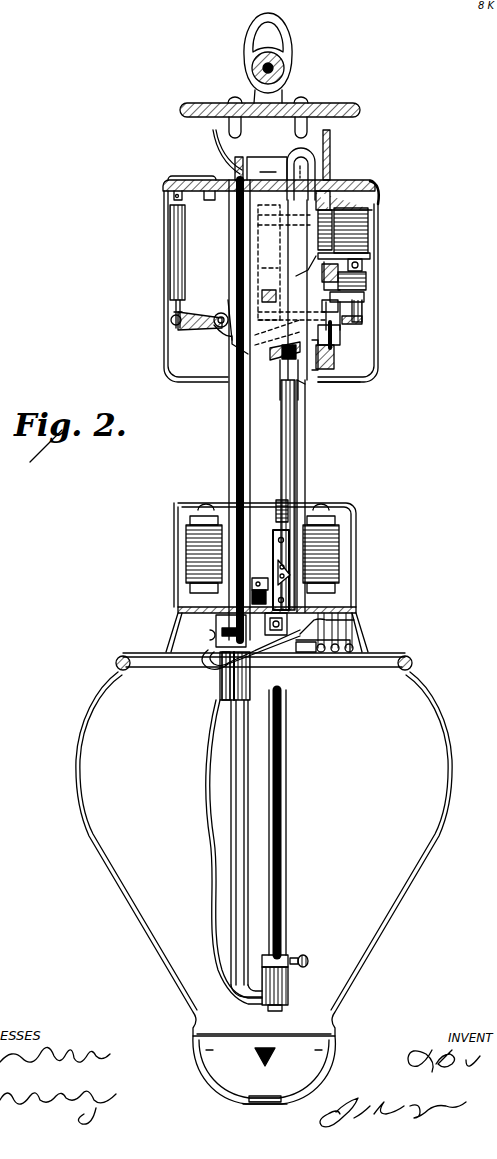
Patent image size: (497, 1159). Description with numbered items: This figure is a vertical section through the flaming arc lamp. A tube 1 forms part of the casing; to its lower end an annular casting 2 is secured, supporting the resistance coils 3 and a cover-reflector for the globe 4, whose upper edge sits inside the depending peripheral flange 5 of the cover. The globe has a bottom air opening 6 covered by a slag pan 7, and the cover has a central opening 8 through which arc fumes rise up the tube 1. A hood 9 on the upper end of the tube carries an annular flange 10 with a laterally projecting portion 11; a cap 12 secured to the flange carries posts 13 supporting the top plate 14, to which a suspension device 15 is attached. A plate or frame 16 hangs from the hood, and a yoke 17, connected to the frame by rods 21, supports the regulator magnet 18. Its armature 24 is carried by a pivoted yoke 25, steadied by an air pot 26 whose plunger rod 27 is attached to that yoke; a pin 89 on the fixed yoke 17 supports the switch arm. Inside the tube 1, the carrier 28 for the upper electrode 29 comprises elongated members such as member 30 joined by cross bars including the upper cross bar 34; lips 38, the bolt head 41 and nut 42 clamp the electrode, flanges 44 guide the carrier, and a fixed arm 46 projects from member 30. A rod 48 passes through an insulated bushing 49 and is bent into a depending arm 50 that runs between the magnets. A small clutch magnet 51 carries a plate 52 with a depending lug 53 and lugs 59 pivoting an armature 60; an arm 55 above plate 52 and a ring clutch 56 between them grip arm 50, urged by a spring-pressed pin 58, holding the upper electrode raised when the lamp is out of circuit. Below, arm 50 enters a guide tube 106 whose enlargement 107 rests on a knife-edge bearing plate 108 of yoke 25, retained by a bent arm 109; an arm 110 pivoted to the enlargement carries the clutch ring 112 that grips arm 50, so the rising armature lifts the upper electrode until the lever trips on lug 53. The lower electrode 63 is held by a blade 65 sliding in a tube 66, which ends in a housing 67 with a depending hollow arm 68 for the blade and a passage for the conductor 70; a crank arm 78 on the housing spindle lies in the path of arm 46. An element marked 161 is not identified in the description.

The tube 1 is at (228, 266).
The annular casting 2 is at (176, 624).
The resistance coils 3 is at (186, 552).
The globe 4 is at (400, 900).
The depending peripheral flange 5 is at (428, 656).
The opening 6 is at (278, 1104).
The pan 7 is at (264, 1069).
The central opening 8 is at (306, 654).
The hood 9 is at (360, 184).
The annular flange 10 is at (239, 158).
The laterally projecting portion 11 is at (314, 166).
The cap 12 is at (216, 145).
The posts 13 is at (306, 116).
The top plate 14 is at (212, 102).
The suspension device 15 is at (279, 62).
The plate or frame 16 is at (378, 194).
The yoke 17 is at (218, 312).
The magnet 18 is at (366, 300).
The rods 21 is at (366, 314).
The armature 24 is at (340, 364).
The armature yoke 25 is at (278, 358).
The air pot 26 is at (186, 254).
The rod 27 is at (176, 300).
The upper electrode carrier 28 is at (296, 490).
The upper metallic electrode 29 is at (296, 656).
The elongated member 30 is at (281, 438).
The upper cross bar 34 is at (305, 393).
The lips 38 is at (272, 656).
The head 41 is at (268, 622).
The nut 42 is at (276, 540).
The flanges 44 is at (278, 520).
The fixed arm 46 is at (277, 576).
The rod 48 is at (269, 165).
The insulated bushing 49 is at (285, 360).
The depending arm 50 is at (332, 184).
The small magnet 51 is at (370, 234).
The arm or plate 52 is at (372, 254).
The depending lug 53 is at (364, 266).
The arm 55 is at (296, 249).
The ring clutch 56 is at (296, 268).
The spring actuated pin 58 is at (296, 230).
The lugs 59 is at (370, 278).
The armature 60 is at (368, 284).
The lower electrode 63 is at (286, 826).
The blade or carrier 65 is at (214, 504).
The tube 66 is at (229, 230).
The housing 67 is at (234, 172).
The depending hollow arm 68 is at (226, 676).
The conductor 70 is at (207, 766).
The crank arm 78 is at (230, 672).
The pin 89 is at (228, 338).
The guide tube 106 is at (304, 322).
The enlargement 107 is at (342, 336).
The knife-edge bearing plate 108 is at (336, 356).
The bent arm 109 is at (334, 366).
The arm 110 is at (331, 307).
The clutch ring 112 is at (364, 320).
The terminals 161 is at (330, 654).